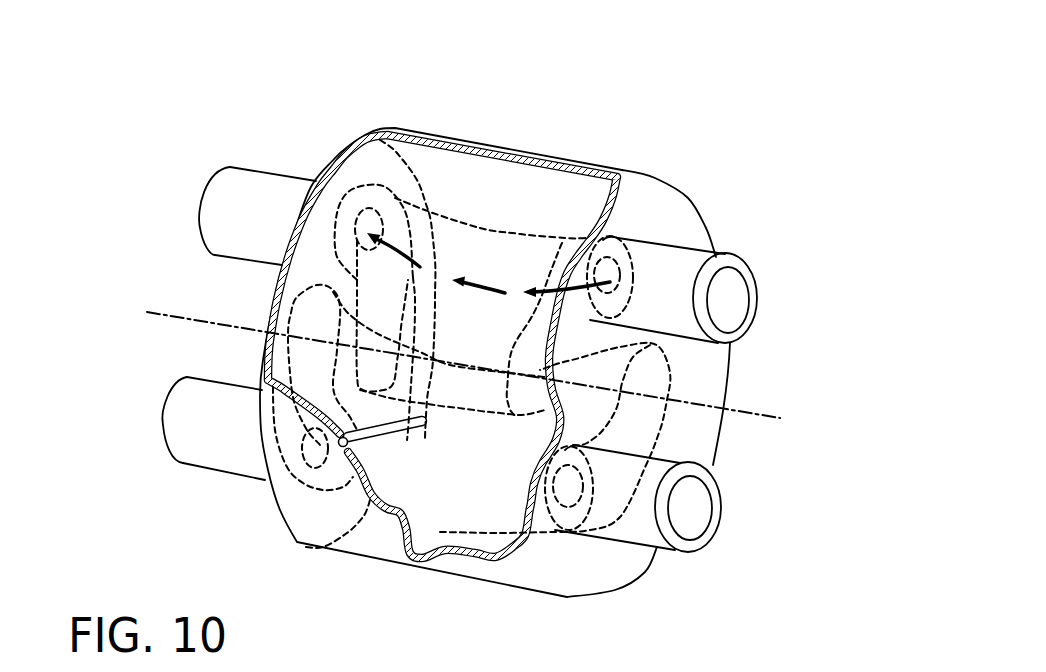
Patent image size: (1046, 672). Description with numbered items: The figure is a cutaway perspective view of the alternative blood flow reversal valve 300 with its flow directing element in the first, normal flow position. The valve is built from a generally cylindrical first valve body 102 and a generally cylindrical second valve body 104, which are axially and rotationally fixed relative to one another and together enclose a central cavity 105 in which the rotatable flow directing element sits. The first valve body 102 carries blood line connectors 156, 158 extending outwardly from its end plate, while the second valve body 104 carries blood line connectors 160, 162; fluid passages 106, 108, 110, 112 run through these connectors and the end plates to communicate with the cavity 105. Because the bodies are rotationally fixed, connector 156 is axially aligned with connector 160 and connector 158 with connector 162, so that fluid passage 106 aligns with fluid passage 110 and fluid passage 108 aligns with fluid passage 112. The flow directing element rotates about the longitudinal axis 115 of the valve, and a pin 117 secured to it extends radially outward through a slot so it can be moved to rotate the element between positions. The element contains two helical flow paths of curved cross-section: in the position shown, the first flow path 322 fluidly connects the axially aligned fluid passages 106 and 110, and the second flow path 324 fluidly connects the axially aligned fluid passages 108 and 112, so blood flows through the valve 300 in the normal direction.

The blood flow reversal valve 300 is at (694, 86).
The first valve body 102 is at (663, 192).
The second valve body 104 is at (377, 124).
The cavity 105 is at (448, 127).
The fluid passage 106 is at (732, 303).
The fluid passage 108 is at (697, 511).
The fluid passage 110 is at (200, 208).
The fluid passage 112 is at (163, 417).
The longitudinal axis 115 is at (168, 312).
The pin 117 is at (370, 437).
The blood line connector 156 is at (677, 258).
The blood line connector 158 is at (633, 533).
The blood line connector 160 is at (238, 182).
The blood line connector 162 is at (193, 457).
The first flow path 322 is at (500, 255).
The second flow path 324 is at (417, 490).